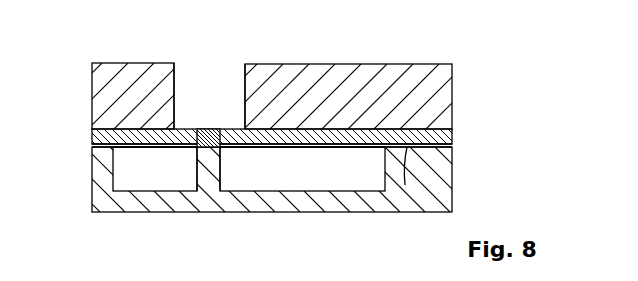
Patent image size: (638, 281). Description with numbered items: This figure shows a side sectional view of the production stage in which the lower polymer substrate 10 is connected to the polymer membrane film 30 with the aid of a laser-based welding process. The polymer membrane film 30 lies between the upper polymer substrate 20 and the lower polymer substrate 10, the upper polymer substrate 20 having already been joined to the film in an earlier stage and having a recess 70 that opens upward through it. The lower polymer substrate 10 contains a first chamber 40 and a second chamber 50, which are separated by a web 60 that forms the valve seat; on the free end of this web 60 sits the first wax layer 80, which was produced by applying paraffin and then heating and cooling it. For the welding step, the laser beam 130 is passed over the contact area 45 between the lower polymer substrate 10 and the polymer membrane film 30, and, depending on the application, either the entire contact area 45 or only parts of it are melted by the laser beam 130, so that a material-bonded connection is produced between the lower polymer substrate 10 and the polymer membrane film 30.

The lower polymer substrate 10 is at (100, 166).
The upper polymer substrate 20 is at (100, 100).
The polymer membrane film 30 is at (98, 136).
The first chamber 40 is at (157, 175).
The contact area 45 is at (433, 149).
The second chamber 50 is at (304, 175).
The web 60 is at (208, 175).
The recess 70 is at (207, 88).
The first wax layer 80 is at (210, 137).
The laser beam 130 is at (405, 185).